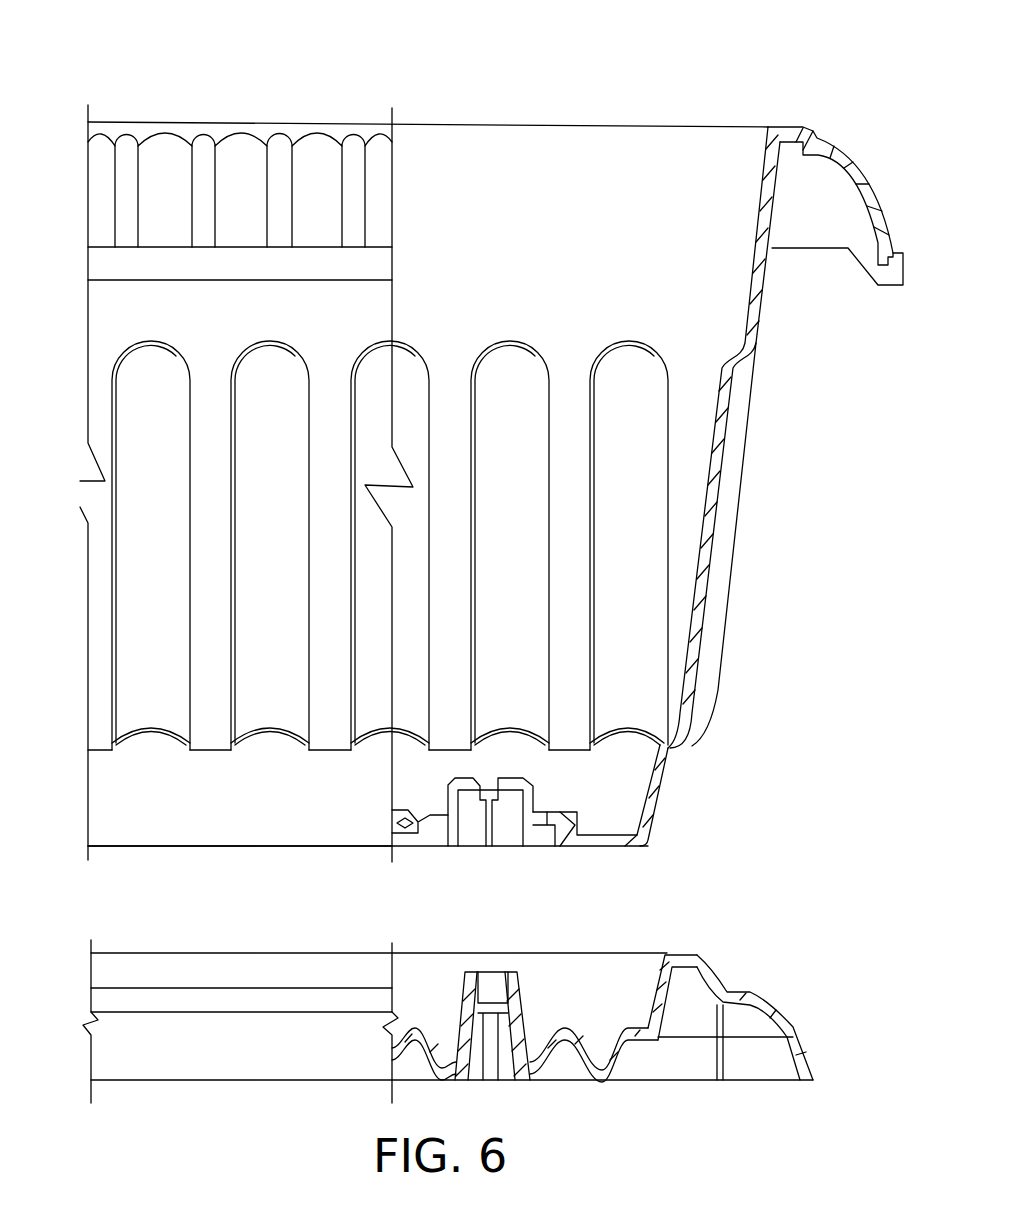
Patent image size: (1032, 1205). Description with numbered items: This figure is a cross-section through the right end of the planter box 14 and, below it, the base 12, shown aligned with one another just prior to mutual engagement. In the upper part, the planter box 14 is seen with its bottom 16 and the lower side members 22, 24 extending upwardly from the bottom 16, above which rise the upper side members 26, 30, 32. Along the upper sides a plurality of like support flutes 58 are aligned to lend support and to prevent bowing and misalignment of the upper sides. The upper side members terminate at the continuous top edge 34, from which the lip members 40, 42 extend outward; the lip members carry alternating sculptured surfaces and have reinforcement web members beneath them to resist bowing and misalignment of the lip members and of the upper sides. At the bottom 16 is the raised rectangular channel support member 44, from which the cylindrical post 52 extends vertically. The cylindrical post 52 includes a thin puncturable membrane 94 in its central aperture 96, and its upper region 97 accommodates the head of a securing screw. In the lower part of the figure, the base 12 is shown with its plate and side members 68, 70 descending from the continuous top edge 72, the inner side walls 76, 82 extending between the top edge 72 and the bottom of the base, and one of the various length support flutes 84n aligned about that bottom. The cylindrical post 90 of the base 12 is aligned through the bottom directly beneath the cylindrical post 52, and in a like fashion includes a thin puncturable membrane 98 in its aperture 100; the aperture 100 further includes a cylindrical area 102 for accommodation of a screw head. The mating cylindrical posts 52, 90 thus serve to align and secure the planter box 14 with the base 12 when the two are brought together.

The planter box 14 is at (712, 65).
The continuous top edge 34 is at (168, 120).
The lip member 40 is at (243, 150).
The upper side member 26 is at (610, 211).
The upper side member 30 is at (232, 328).
The support flute 58 is at (143, 402).
The upper side member 32 is at (747, 430).
The lip member 42 is at (856, 142).
The lower side member 24 is at (659, 797).
The bottom 16 is at (610, 850).
The raised rectangular channel support member 44 is at (558, 825).
The thin puncturable membrane 94 is at (492, 798).
The upper region 97 is at (468, 776).
The central aperture 96 is at (489, 781).
The cylindrical post 52 is at (533, 790).
The lower side member 22 is at (252, 817).
The base 12 is at (805, 935).
The plate and side member 68 is at (207, 1038).
The inner side wall 76 is at (437, 1002).
The support flute 84n is at (623, 1073).
The aperture 100 is at (492, 1013).
The cylindrical area 102 is at (478, 973).
The thin puncturable membrane 98 is at (492, 1080).
The cylindrical post 90 is at (522, 995).
The continuous top edge 72 is at (673, 955).
The inner side wall 82 is at (655, 998).
The plate and side member 70 is at (813, 1030).